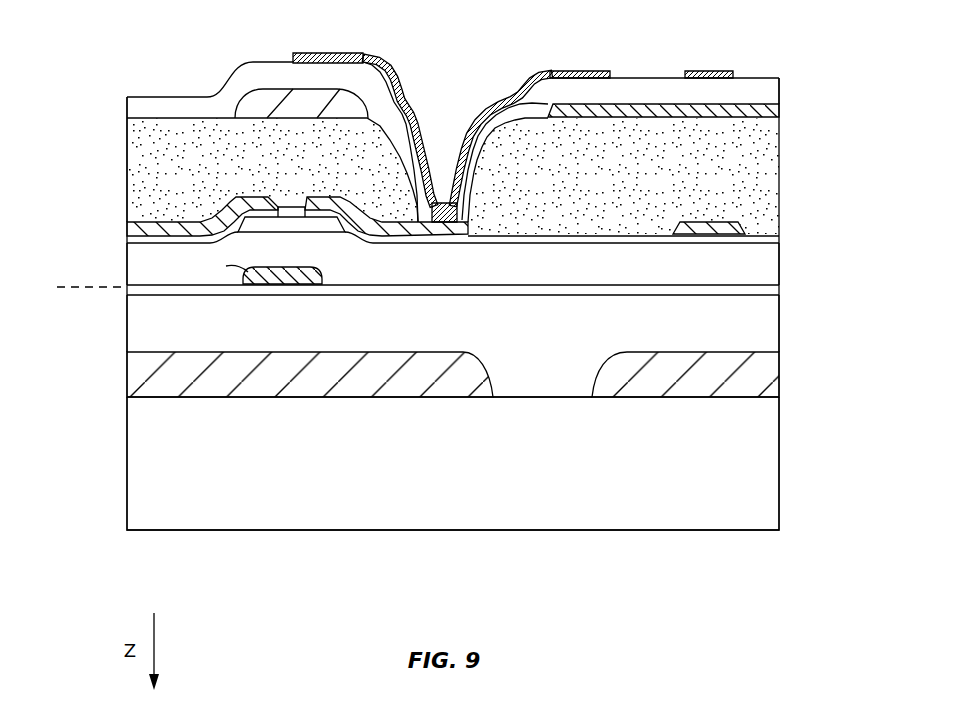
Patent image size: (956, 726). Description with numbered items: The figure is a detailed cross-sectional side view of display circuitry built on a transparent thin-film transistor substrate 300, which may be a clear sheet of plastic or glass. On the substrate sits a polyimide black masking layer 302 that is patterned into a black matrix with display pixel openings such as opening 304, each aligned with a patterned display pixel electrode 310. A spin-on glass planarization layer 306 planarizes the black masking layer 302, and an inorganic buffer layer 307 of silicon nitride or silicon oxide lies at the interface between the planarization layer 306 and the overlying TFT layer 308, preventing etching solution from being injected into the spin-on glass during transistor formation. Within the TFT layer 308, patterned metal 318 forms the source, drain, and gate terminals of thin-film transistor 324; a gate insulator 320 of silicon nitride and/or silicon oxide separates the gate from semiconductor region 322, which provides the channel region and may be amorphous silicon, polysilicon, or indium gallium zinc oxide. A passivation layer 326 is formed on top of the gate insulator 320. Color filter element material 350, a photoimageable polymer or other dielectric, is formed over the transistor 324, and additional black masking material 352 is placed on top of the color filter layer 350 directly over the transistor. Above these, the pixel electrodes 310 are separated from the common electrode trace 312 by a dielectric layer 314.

The substrate 300 is at (770, 459).
The black masking layer 302 is at (134, 374).
The opening 304 is at (592, 403).
The planarization layer 306 is at (134, 320).
The inorganic buffer layer 307 is at (784, 291).
The TFT layer 308 is at (54, 40).
The display pixel electrodes 310 is at (583, 70).
The common electrode trace 312 is at (750, 103).
The dielectric layer 314 is at (157, 102).
The patterned metal 318 is at (183, 228).
The gate insulator 320 is at (120, 245).
The semiconductor region 322 is at (278, 228).
The thin-film transistor 324 is at (292, 176).
The passivation layer 326 is at (605, 232).
The color filter element material 350 is at (120, 118).
The additional black masking material 352 is at (267, 95).